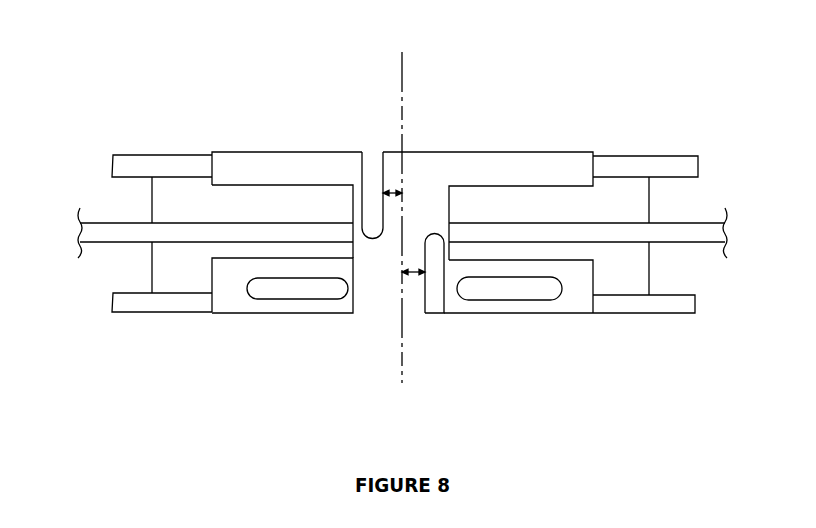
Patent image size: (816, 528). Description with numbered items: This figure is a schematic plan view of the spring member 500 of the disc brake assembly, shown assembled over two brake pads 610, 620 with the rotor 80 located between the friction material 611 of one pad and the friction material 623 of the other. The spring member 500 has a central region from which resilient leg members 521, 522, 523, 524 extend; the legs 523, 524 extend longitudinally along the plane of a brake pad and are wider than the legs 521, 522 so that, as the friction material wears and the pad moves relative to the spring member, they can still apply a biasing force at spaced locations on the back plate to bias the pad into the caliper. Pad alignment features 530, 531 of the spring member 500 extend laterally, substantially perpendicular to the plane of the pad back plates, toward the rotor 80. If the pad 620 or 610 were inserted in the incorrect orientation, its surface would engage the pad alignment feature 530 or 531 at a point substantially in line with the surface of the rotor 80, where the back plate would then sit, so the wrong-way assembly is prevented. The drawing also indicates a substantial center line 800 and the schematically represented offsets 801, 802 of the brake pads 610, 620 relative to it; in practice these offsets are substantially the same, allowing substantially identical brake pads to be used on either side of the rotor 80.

The rotor 80 is at (106, 232).
The spring member 500 is at (448, 211).
The resilient leg member 521 is at (555, 160).
The resilient leg member 522 is at (268, 163).
The resilient leg member 523 is at (267, 303).
The resilient leg member 524 is at (572, 297).
The pad alignment feature 530 is at (368, 163).
The pad alignment feature 531 is at (430, 305).
The brake pad 610 is at (128, 300).
The friction material 611 is at (192, 280).
The brake pad 620 is at (138, 168).
The friction material 623 is at (192, 204).
The center line 800 is at (402, 368).
The offset 801 is at (388, 200).
The offset 802 is at (410, 262).